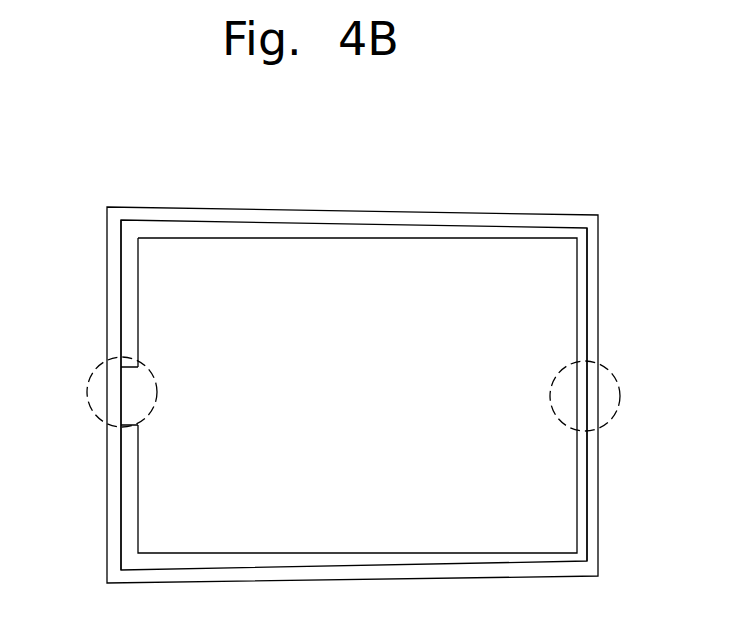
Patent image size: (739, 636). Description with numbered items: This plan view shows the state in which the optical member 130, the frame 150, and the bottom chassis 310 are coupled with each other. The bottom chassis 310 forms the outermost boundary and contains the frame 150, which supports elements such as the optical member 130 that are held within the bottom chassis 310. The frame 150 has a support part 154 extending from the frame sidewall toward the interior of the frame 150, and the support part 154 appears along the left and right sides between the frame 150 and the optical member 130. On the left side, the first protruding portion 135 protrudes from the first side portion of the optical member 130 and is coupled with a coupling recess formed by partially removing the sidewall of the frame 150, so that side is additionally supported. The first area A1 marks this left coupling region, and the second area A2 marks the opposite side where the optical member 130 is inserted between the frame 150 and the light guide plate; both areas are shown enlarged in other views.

The bottom chassis 310 is at (520, 213).
The frame 150 is at (455, 226).
The optical member 130 is at (386, 237).
The first protruding portion 135 is at (112, 392).
The support part 154 is at (127, 305).
The first area A1 is at (157, 391).
The second area A2 is at (550, 390).